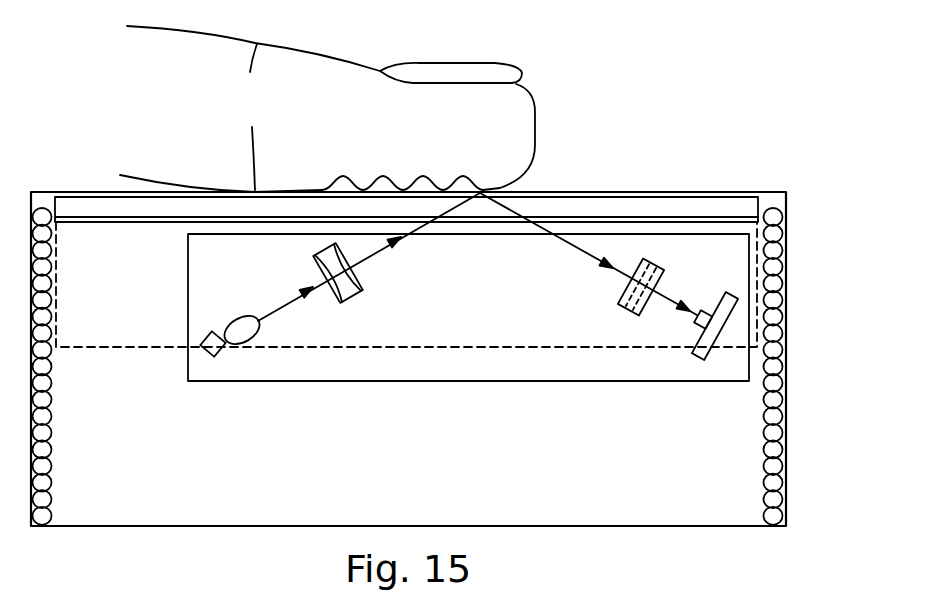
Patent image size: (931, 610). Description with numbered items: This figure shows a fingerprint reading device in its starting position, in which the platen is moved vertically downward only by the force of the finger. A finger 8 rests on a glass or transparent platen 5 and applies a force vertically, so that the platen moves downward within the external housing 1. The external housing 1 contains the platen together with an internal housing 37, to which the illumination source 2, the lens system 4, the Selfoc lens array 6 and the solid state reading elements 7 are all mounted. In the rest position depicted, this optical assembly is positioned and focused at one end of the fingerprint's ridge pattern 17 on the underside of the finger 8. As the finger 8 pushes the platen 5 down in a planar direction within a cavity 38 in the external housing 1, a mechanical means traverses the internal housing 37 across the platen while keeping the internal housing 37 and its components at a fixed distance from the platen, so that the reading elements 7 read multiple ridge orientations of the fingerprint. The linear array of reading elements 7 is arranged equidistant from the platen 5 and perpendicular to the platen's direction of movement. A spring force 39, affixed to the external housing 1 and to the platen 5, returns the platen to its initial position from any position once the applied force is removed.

The external housing 1 is at (113, 527).
The illumination source 2 is at (242, 343).
The lens system 4 is at (352, 300).
The glass or transparent platen 5 is at (532, 197).
The Selfoc lens array 6 is at (630, 302).
The solid state reading elements 7 is at (697, 330).
The finger 8 is at (535, 97).
The fingerprint ridge pattern 17 is at (430, 173).
The internal housing 37 is at (397, 380).
The cavity 38 is at (73, 347).
The spring force 39 is at (55, 425).